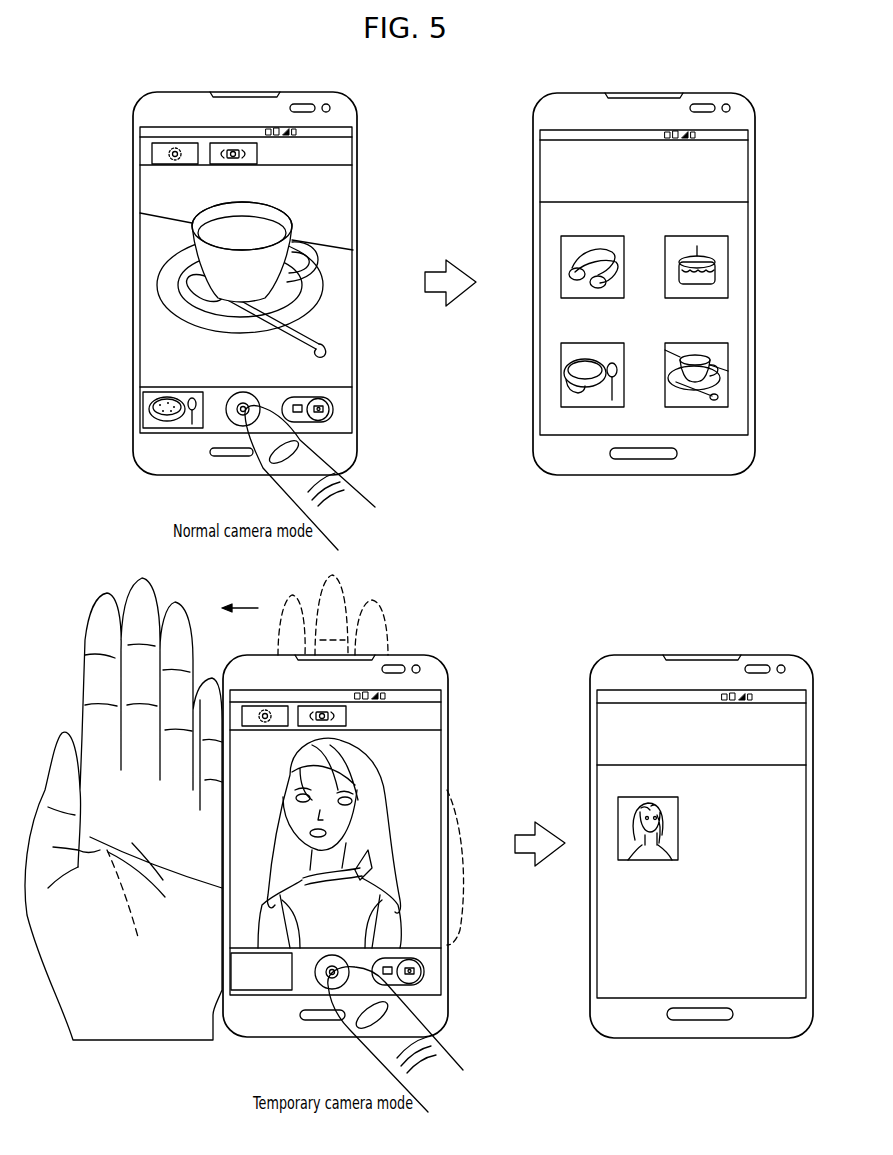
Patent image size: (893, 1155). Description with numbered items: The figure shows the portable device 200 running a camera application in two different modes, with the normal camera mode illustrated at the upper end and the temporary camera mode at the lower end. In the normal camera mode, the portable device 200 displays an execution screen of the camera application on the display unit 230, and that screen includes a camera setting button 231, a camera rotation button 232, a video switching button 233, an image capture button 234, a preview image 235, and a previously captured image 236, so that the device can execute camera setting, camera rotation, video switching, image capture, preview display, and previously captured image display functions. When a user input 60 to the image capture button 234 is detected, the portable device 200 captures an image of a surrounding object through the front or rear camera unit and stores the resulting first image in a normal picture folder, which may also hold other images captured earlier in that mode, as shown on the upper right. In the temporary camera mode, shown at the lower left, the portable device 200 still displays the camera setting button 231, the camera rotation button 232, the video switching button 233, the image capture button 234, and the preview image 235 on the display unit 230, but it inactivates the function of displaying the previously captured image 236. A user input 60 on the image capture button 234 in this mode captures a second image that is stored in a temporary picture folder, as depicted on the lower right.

The portable device 200 is at (143, 446).
The display unit 230 is at (353, 340).
The camera setting button 231 is at (148, 154).
The camera rotation button 232 is at (221, 150).
The video switching button 233 is at (336, 409).
The image capture button 234 is at (228, 422).
The preview image 235 is at (150, 289).
The previously captured image 236 is at (143, 409).
The user input 60 is at (355, 482).